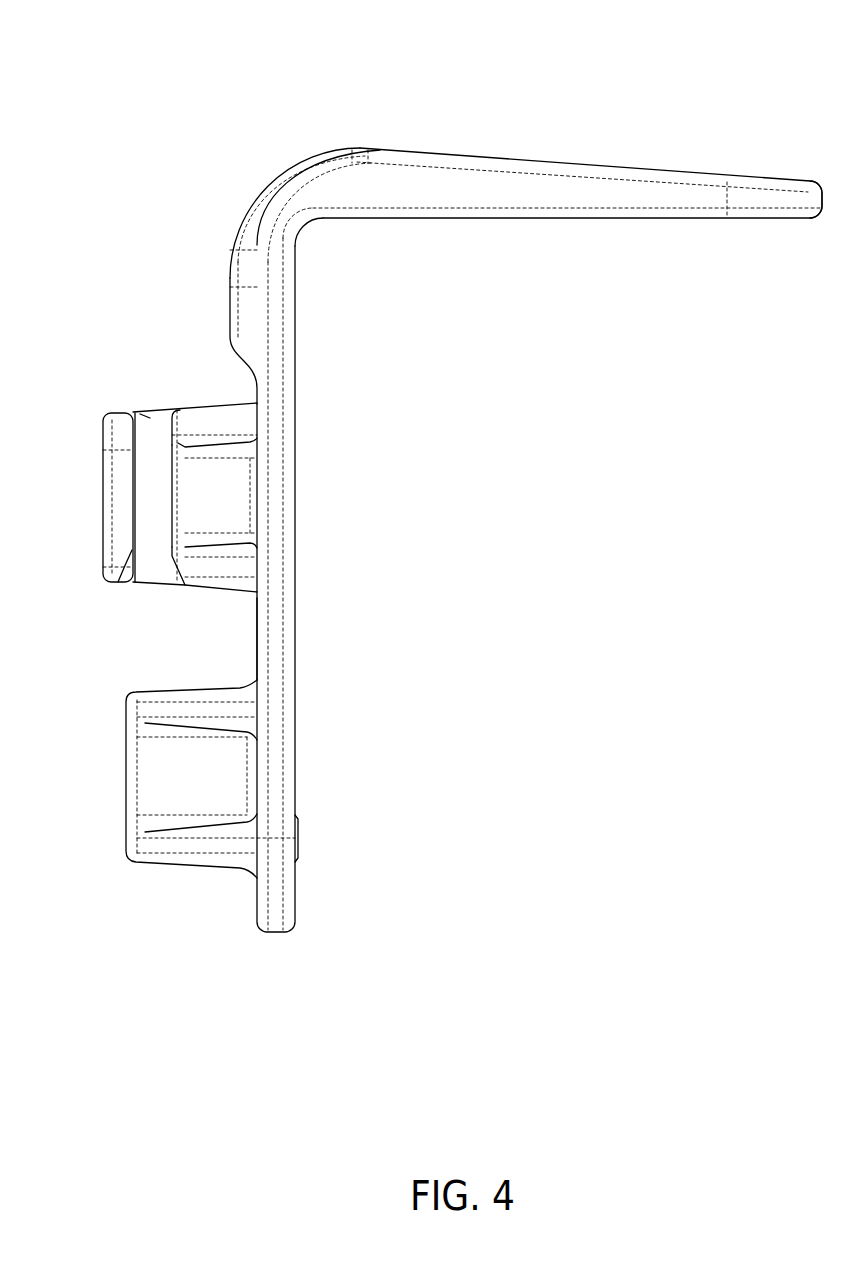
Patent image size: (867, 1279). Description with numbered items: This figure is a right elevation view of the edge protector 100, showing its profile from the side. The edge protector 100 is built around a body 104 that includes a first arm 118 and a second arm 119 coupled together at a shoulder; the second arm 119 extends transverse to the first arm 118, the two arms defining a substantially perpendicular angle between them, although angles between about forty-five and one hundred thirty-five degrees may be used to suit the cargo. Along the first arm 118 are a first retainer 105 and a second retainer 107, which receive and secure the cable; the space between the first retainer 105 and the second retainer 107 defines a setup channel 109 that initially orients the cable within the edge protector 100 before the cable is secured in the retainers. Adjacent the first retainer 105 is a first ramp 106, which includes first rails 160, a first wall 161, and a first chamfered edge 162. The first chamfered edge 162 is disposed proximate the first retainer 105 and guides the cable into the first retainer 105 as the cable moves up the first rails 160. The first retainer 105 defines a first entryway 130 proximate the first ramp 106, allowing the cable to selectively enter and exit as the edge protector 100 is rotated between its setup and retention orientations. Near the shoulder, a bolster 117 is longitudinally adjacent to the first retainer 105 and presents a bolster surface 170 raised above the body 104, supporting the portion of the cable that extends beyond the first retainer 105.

The edge protector 100 is at (679, 70).
The body 104 is at (400, 197).
The first retainer 105 is at (102, 500).
The first ramp 106 is at (191, 479).
The second retainer 107 is at (126, 780).
The setup channel 109 is at (257, 643).
The bolster 117 is at (252, 228).
The first arm 118 is at (278, 602).
The second arm 119 is at (293, 236).
The first entryway 130 is at (148, 420).
The first rails 160 is at (232, 428).
The first wall 161 is at (235, 500).
The first chamfered edge 162 is at (177, 575).
The bolster surface 170 is at (233, 267).